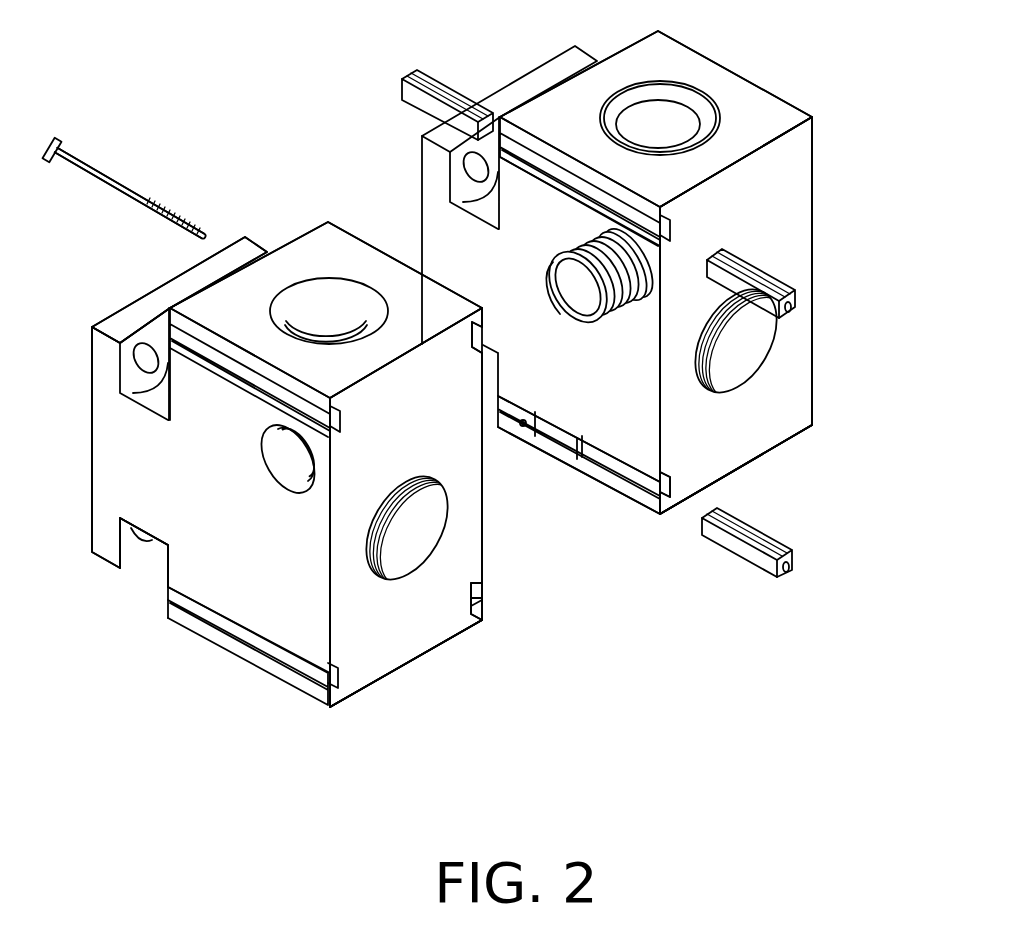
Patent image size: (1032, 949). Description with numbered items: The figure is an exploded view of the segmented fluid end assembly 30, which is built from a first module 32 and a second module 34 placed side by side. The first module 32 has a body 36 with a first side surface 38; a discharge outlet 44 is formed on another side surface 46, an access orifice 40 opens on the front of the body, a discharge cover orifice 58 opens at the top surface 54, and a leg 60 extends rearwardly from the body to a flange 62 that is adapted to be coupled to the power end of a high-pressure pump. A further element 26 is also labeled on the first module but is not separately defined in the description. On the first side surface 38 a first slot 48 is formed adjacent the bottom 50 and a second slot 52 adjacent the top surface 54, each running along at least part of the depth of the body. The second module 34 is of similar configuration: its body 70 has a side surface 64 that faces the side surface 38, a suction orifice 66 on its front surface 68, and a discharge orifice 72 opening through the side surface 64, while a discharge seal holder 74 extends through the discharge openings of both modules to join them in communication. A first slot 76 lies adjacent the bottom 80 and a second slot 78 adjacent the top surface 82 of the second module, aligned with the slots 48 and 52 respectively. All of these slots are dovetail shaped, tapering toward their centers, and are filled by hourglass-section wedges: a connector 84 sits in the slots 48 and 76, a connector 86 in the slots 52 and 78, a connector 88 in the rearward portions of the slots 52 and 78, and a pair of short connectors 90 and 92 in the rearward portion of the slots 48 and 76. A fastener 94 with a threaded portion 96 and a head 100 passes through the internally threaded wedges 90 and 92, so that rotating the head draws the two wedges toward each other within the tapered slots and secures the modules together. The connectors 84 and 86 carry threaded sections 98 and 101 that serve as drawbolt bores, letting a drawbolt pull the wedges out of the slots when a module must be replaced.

The first manifold block 26 is at (365, 673).
The segmented fluid end assembly 30 is at (907, 153).
The first module 32 is at (453, 622).
The second module 34 is at (797, 380).
The body 36 is at (428, 635).
The first side surface 38 is at (482, 520).
The access orifice 40 is at (428, 518).
The discharge outlet 44 is at (288, 475).
The side surface 46 is at (153, 476).
The first slot 48 is at (482, 597).
The bottom 50 is at (405, 667).
The second slot 52 is at (480, 327).
The top surface 54 is at (323, 243).
The discharge cover orifice 58 is at (307, 290).
The leg 60 is at (157, 527).
The flange 62 is at (105, 512).
The side surface 64 is at (598, 398).
The suction orifice 66 is at (743, 381).
The front surface 68 is at (788, 177).
The body 70 is at (780, 428).
The discharge orifice 72 is at (597, 233).
The discharge seal holder 74 is at (590, 320).
The first slot 76 is at (678, 505).
The second slot 78 is at (670, 222).
The bottom 80 is at (760, 458).
The top surface 82 is at (752, 95).
The connector 84 is at (788, 537).
The connector 86 is at (800, 297).
The connector 88 is at (440, 82).
The connector 90 is at (515, 435).
The connector 92 is at (562, 443).
The fastener 94 is at (135, 192).
The threaded portion 96 is at (175, 213).
The threaded section 98 is at (783, 577).
The head 100 is at (57, 135).
The threaded section 101 is at (797, 313).